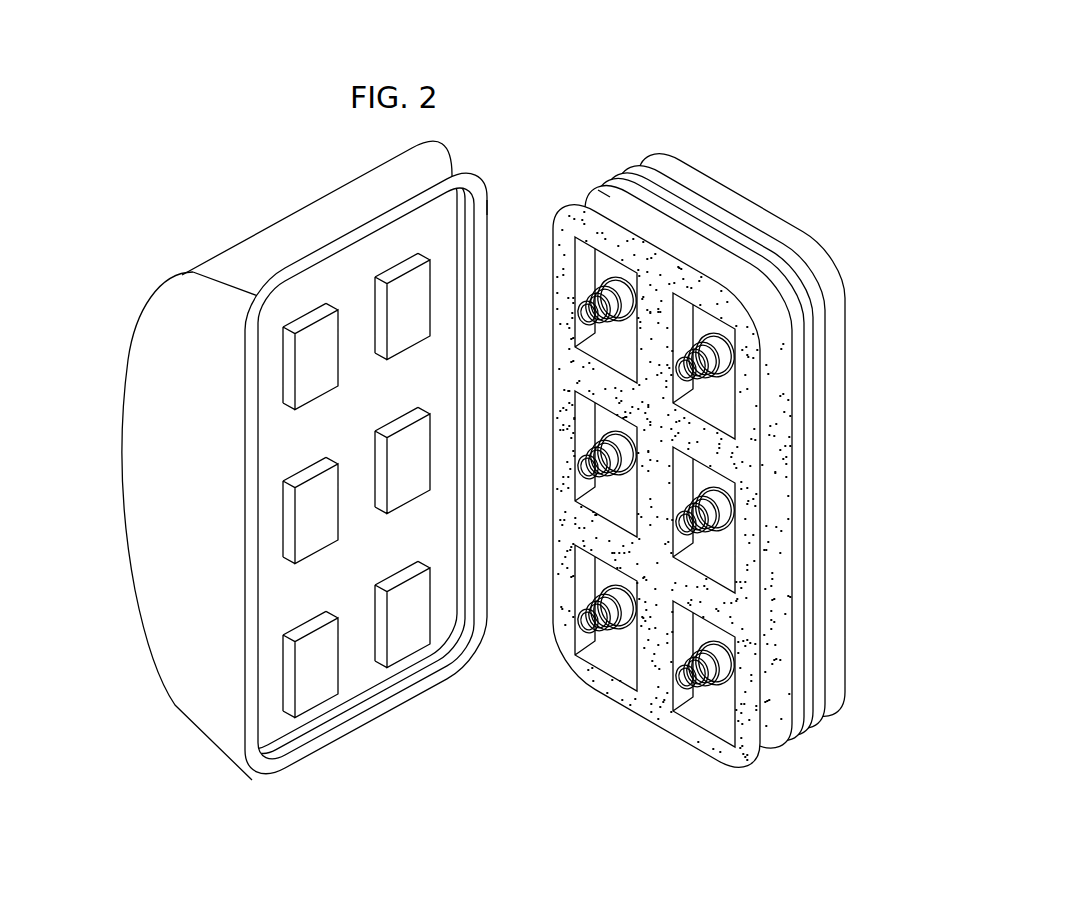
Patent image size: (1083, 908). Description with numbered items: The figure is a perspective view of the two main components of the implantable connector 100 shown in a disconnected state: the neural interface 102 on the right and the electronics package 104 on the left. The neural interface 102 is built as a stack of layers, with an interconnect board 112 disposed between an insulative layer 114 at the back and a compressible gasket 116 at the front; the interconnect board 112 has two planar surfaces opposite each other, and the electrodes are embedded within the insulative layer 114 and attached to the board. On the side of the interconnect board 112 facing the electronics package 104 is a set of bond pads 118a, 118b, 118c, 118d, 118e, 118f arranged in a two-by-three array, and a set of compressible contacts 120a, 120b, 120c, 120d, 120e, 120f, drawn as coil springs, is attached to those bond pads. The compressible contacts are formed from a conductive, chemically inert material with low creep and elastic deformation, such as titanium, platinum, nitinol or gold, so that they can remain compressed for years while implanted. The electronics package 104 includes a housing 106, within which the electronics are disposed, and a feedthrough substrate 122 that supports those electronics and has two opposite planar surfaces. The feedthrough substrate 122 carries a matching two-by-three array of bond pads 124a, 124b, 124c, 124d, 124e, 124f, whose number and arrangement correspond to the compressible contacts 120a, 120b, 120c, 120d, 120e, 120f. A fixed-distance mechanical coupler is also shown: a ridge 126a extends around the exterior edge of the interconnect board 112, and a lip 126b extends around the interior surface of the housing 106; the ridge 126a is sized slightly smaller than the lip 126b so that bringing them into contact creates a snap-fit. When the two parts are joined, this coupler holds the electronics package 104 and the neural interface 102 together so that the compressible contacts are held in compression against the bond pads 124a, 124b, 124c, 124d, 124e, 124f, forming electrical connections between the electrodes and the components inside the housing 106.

The implantable connector 100 is at (474, 417).
The neural interface 102 is at (697, 462).
The electronics package 104 is at (304, 460).
The housing 106 is at (125, 416).
The interconnect board 112 is at (813, 728).
The insulative layer 114 is at (840, 714).
The compressible gasket 116 is at (697, 489).
The bond pad 118a is at (565, 310).
The bond pad 118b is at (565, 464).
The bond pad 118c is at (565, 618).
The bond pad 118d is at (788, 366).
The bond pad 118e is at (788, 520).
The bond pad 118f is at (786, 674).
The compressible contact 120a is at (598, 313).
The compressible contact 120b is at (598, 467).
The compressible contact 120c is at (598, 621).
The compressible contact 120d is at (735, 372).
The compressible contact 120e is at (735, 528).
The compressible contact 120f is at (735, 680).
The feedthrough substrate 122 is at (368, 690).
The bond pad 124a is at (415, 316).
The bond pad 124b is at (415, 470).
The bond pad 124c is at (415, 623).
The bond pad 124d is at (305, 380).
The bond pad 124e is at (305, 530).
The bond pad 124f is at (305, 685).
The ridge 126a is at (600, 188).
The lip 126b is at (484, 234).